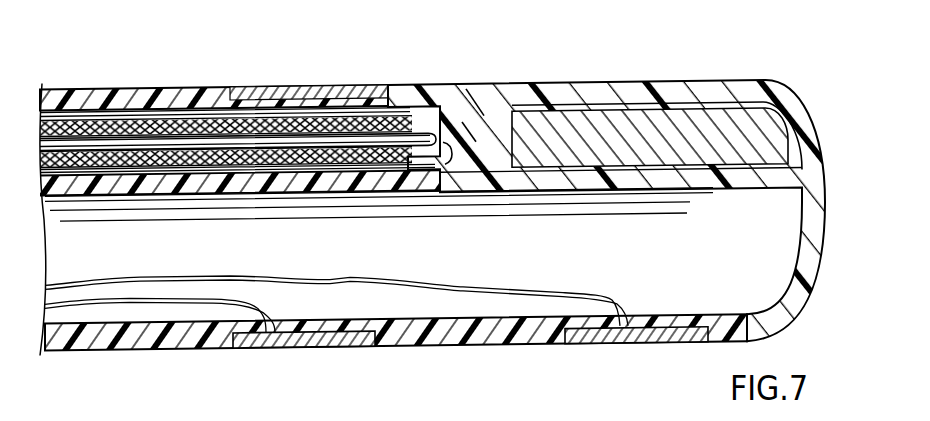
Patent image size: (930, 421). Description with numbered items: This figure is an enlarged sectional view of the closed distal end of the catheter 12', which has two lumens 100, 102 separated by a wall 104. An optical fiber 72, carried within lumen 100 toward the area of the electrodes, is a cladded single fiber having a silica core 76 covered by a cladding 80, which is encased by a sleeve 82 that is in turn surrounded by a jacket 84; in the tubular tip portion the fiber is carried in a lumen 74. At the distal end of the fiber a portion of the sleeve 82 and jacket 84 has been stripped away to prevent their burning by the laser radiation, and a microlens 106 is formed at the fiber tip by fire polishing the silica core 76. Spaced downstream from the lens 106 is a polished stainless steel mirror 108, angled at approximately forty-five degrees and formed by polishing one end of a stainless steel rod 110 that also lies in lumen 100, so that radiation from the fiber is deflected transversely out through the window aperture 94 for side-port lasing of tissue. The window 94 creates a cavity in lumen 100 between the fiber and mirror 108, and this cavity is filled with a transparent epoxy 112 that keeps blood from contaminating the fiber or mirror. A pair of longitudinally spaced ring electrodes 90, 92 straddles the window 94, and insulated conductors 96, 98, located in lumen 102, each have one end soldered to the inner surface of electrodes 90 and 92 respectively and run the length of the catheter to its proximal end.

The catheter 12' is at (393, 241).
The optical fiber 72 is at (113, 107).
The lumen 74 is at (683, 243).
The core 76 is at (140, 146).
The cladding 80 is at (187, 137).
The sleeve 82 is at (198, 130).
The jacket 84 is at (243, 120).
The ring electrode 90 is at (313, 348).
The ring electrode 92 is at (655, 348).
The window aperture 94 is at (442, 83).
The insulated conductor 96 is at (184, 309).
The insulated conductor 98 is at (467, 296).
The lumen 100 is at (135, 182).
The lumen 102 is at (97, 250).
The wall 104 is at (332, 185).
The microlens 106 is at (462, 138).
The mirror 108 is at (471, 103).
The stainless steel rod 110 is at (665, 125).
The transparent epoxy 112 is at (470, 125).